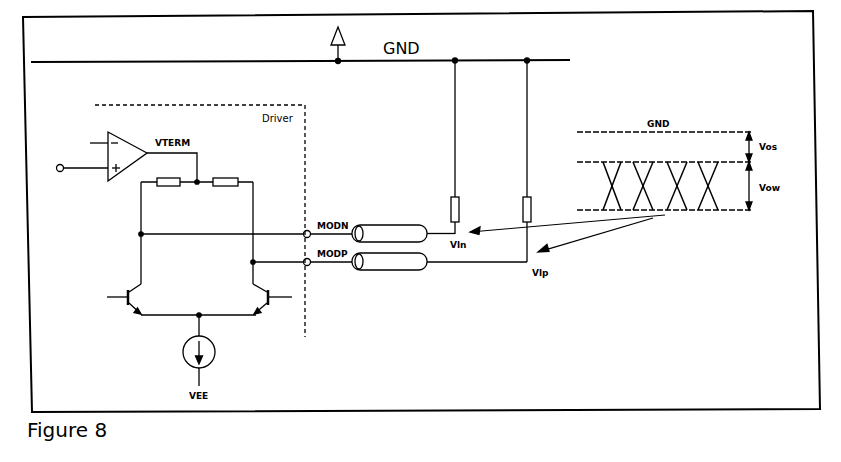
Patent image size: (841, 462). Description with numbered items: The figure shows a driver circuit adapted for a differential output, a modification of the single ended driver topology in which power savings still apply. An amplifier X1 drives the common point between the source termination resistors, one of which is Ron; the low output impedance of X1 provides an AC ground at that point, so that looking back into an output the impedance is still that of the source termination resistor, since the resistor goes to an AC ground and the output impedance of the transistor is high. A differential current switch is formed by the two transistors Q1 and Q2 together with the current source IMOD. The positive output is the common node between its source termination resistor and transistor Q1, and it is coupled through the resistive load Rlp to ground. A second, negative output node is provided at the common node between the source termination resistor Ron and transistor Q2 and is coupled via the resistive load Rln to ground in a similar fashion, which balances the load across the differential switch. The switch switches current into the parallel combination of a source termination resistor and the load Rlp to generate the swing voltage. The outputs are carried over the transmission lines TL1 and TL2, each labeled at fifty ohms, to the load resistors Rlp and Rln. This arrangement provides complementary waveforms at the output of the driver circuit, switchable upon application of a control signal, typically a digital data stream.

The amplifier X1 is at (102, 155).
The source termination resistor Ron is at (197, 184).
The transistor Q1 is at (272, 297).
The transistor Q2 is at (124, 296).
The current source IMOD is at (182, 350).
The transmission line 50 ohm TL1 is at (419, 271).
The transmission line 50 ohm TL2 is at (383, 228).
The resistive load Rln is at (454, 215).
The resistive load Rlp is at (525, 229).